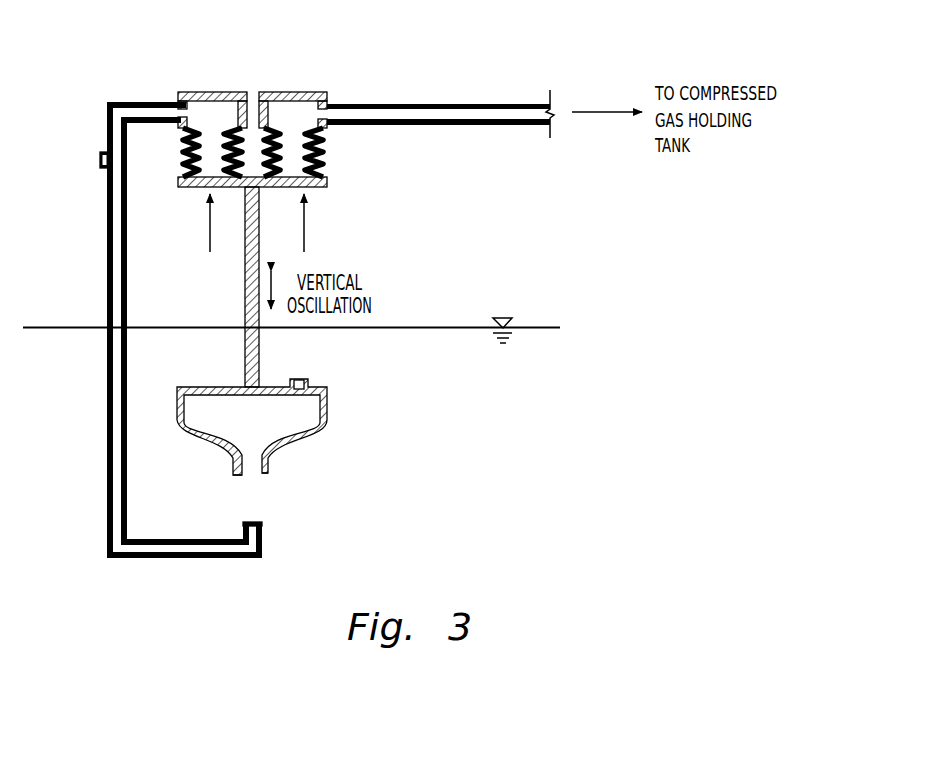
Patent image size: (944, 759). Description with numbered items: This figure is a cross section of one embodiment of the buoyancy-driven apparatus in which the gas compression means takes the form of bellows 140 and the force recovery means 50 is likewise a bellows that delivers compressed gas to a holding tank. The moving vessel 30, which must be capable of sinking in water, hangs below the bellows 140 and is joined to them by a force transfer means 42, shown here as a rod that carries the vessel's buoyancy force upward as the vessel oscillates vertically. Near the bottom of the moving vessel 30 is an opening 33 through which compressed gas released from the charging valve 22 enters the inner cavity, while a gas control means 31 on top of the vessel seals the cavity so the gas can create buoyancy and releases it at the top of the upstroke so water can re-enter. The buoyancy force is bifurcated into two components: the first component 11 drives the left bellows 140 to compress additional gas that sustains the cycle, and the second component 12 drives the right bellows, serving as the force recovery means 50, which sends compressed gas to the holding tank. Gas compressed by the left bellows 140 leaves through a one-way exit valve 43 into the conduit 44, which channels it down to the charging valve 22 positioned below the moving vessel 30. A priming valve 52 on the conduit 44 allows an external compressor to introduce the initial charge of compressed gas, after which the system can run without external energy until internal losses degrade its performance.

The bellows 140 is at (222, 92).
The one-way exit valve 43 is at (180, 106).
The force recovery means 50 is at (323, 180).
The second component of the buoyancy force 12 is at (305, 228).
The first component of the buoyancy force 11 is at (210, 226).
The priming valve 52 is at (100, 158).
The force transfer means 42 is at (246, 368).
The gas control means 31 is at (299, 380).
The moving vessel 30 is at (327, 410).
The opening 33 is at (262, 475).
The charging valve 22 is at (254, 522).
The conduit 44 is at (107, 405).